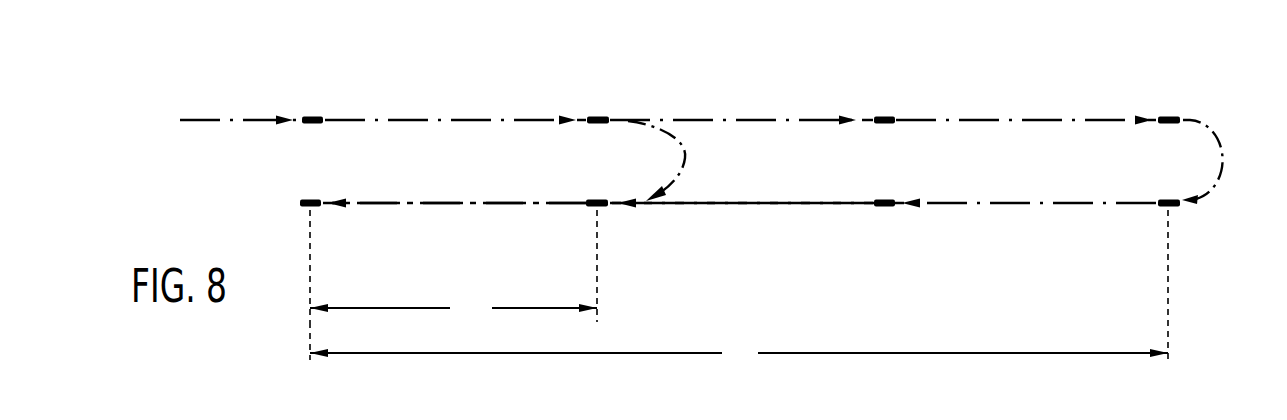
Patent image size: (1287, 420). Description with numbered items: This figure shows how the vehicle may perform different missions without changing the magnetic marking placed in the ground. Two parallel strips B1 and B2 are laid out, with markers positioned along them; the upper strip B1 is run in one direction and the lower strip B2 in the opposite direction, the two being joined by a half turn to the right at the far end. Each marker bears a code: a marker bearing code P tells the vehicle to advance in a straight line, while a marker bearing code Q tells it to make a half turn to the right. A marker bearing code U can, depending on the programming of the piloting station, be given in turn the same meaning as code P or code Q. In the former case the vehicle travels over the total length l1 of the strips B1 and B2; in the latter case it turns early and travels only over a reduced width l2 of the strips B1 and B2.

The first parallel strip B1 is at (770, 120).
The second parallel strip B2 is at (720, 203).
The total length l1 is at (739, 289).
The reduced width l2 is at (453, 266).